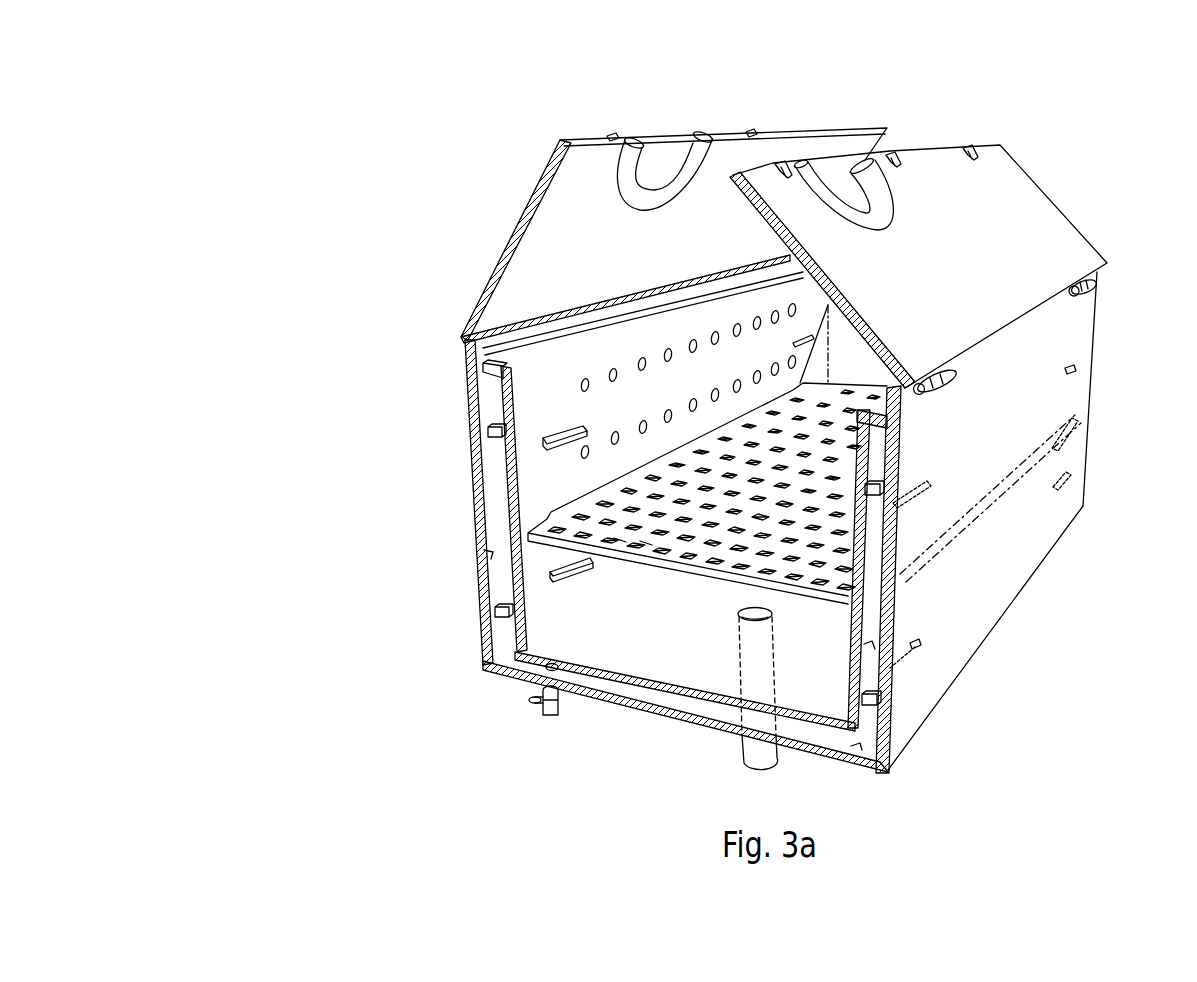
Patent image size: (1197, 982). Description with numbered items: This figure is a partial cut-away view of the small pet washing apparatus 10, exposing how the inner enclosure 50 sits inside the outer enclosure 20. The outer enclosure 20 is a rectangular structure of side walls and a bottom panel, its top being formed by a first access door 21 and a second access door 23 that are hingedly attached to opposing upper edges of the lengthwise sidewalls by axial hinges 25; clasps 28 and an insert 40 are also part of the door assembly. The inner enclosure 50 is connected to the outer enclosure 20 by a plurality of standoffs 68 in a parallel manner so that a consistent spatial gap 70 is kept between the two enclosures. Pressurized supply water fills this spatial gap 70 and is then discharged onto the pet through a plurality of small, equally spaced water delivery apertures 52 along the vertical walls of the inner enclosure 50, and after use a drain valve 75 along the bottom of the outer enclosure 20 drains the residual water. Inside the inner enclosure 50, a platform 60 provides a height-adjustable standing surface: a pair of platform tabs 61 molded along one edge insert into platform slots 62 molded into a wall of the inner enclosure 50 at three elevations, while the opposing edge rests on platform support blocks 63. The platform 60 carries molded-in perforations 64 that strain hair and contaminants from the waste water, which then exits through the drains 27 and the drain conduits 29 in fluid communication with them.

The small pet washing apparatus 10 is at (266, 160).
The outer enclosure 20 is at (1072, 503).
The first access door 21 is at (1040, 218).
The second access door 23 is at (577, 160).
The axial hinges 25 is at (955, 370).
The drains 27 is at (748, 615).
The clasps 28 is at (609, 132).
The drain conduits 29 is at (758, 752).
The insert 40 is at (688, 152).
The inner enclosure 50 is at (700, 688).
The water delivery apertures 52 is at (609, 432).
The platform 60 is at (977, 520).
The platform tabs 61 is at (552, 512).
The platform slots 62 is at (547, 437).
The platform support blocks 63 is at (1057, 487).
The perforations 64 is at (680, 550).
The standoffs 68 is at (488, 430).
The spatial gap 70 is at (490, 555).
The drain valve 75 is at (547, 715).